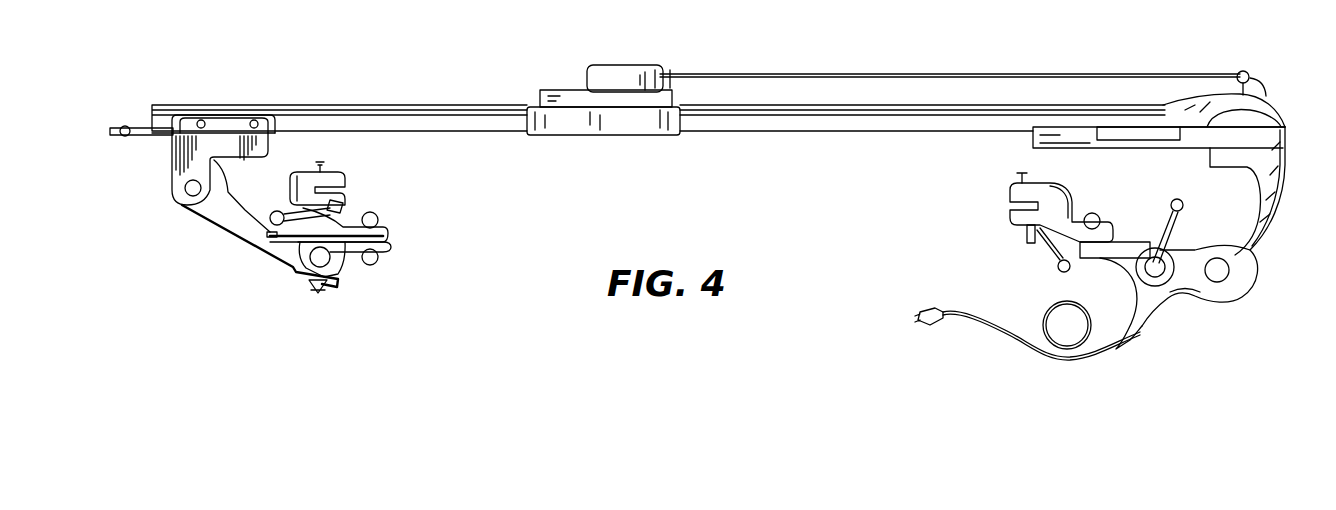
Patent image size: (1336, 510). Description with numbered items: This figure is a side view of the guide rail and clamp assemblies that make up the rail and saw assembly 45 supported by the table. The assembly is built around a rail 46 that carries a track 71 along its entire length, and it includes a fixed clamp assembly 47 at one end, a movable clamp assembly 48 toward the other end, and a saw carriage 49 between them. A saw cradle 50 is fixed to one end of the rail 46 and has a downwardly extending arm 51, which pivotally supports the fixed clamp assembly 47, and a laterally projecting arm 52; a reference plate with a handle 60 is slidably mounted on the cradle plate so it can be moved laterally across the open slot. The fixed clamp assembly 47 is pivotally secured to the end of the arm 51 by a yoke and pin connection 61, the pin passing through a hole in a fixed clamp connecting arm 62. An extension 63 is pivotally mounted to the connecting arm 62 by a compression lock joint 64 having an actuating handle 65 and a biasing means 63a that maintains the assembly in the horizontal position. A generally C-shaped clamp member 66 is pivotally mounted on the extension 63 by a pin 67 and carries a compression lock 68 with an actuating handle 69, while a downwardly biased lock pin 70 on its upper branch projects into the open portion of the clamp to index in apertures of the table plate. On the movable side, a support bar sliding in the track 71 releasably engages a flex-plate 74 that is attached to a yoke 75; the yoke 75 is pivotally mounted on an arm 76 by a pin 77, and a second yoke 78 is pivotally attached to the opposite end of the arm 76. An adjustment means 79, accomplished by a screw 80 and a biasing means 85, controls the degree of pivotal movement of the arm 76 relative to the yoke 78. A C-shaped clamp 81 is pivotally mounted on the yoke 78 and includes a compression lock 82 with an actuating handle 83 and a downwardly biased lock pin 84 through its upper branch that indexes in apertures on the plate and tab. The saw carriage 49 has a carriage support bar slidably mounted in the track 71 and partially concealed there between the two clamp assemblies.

The rail and saw assembly 45 is at (793, 145).
The rail 46 is at (504, 97).
The fixed clamp assembly 47 is at (998, 222).
The movable clamp assembly 48 is at (392, 237).
The saw carriage 49 is at (611, 137).
The saw cradle 50 is at (1028, 148).
The downwardly extending arm 51 is at (1275, 173).
The laterally projecting arm 52 is at (1268, 122).
The handle 60 is at (1160, 140).
The yoke and pin connection 61 is at (1230, 270).
The fixed clamp connecting arm 62 is at (1190, 272).
The extension 63 is at (1133, 270).
The biasing means 63a is at (1133, 312).
The compression lock joint 64 is at (1152, 237).
The actuating handle 65 is at (1167, 233).
The clamp member 66 is at (1062, 190).
The pin 67 is at (1092, 213).
The compression lock 68 is at (1025, 233).
The actuating handle 69 is at (1048, 263).
The lock pin 70 is at (1013, 178).
The track 71 is at (430, 115).
The flex-plate 74 is at (141, 124).
The yoke 75 is at (178, 152).
The arm 76 is at (233, 237).
The pin 77 is at (185, 196).
The yoke 78 is at (345, 248).
The adjustment means 79 is at (307, 295).
The screw 80 is at (323, 285).
The C-shaped clamp 81 is at (307, 177).
The compression lock 82 is at (340, 203).
The actuating handle 83 is at (278, 212).
The lock pin 84 is at (325, 165).
The biasing means 85 is at (270, 240).